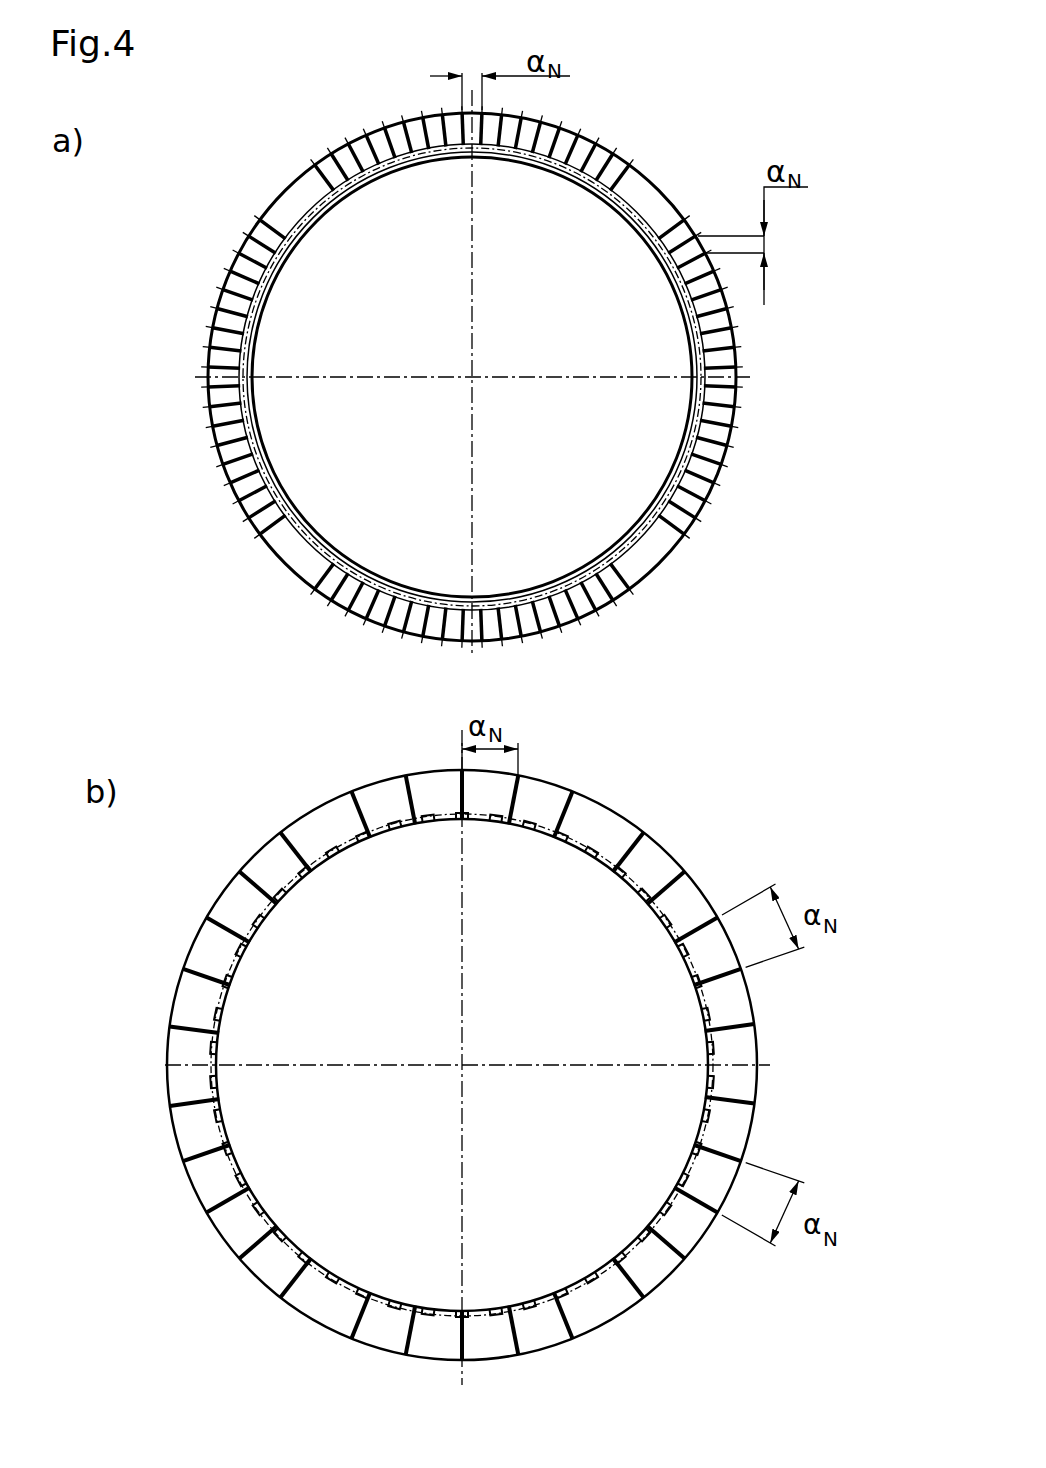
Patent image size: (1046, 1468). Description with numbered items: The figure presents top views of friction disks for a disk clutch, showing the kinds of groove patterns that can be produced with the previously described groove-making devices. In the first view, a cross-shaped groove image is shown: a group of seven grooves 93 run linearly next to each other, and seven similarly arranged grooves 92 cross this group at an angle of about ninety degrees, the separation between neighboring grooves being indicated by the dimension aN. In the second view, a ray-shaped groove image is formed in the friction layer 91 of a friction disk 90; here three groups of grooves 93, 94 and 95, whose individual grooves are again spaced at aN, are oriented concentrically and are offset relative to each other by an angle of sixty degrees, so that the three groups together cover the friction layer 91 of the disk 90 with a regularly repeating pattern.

The friction disk 90 is at (660, 125).
The friction layer 91 is at (647, 553).
The grooves 92 is at (253, 522).
The grooves 93 is at (357, 610).
The grooves 94 is at (668, 880).
The grooves 95 is at (738, 1093).